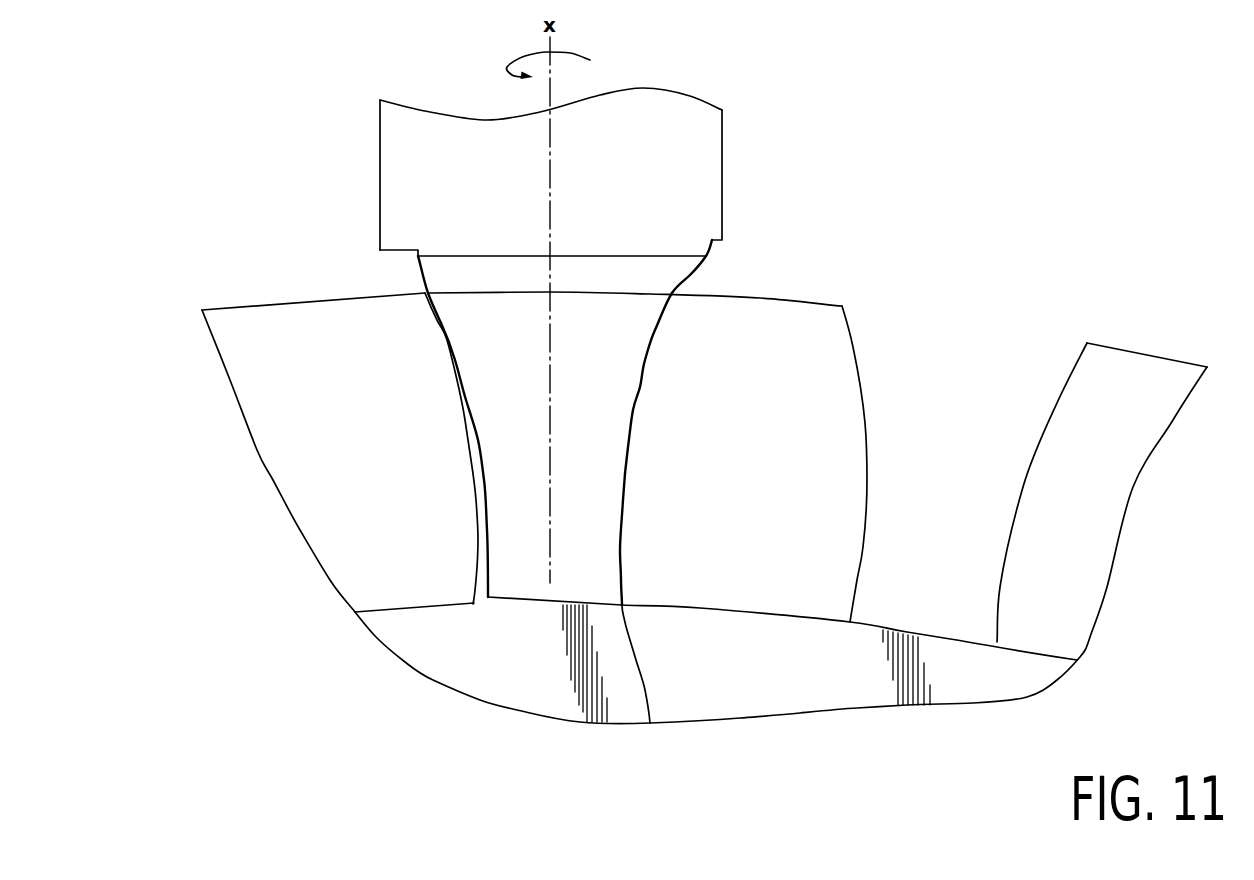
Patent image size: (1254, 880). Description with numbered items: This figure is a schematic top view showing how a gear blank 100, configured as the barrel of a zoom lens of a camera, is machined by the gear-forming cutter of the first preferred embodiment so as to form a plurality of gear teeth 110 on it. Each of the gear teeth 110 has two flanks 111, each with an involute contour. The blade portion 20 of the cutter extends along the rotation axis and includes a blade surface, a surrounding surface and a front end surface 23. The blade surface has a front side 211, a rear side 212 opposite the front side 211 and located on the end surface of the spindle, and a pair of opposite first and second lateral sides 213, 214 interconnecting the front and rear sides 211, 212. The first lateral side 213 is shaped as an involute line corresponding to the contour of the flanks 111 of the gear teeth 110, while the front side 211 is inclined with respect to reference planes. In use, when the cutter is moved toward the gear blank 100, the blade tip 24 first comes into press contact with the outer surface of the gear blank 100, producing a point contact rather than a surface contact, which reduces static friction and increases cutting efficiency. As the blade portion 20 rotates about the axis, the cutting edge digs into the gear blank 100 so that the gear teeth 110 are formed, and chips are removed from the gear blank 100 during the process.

The gear blank 100 is at (366, 645).
The gear teeth 110 is at (806, 414).
The flanks 111 is at (853, 347).
The blade portion 20 is at (498, 315).
The rear side 212 is at (593, 293).
The first lateral side 213 is at (638, 385).
The second lateral side 214 is at (473, 427).
The front end surface 23 is at (456, 680).
The front side 211 is at (527, 600).
The blade tip 24 is at (650, 723).